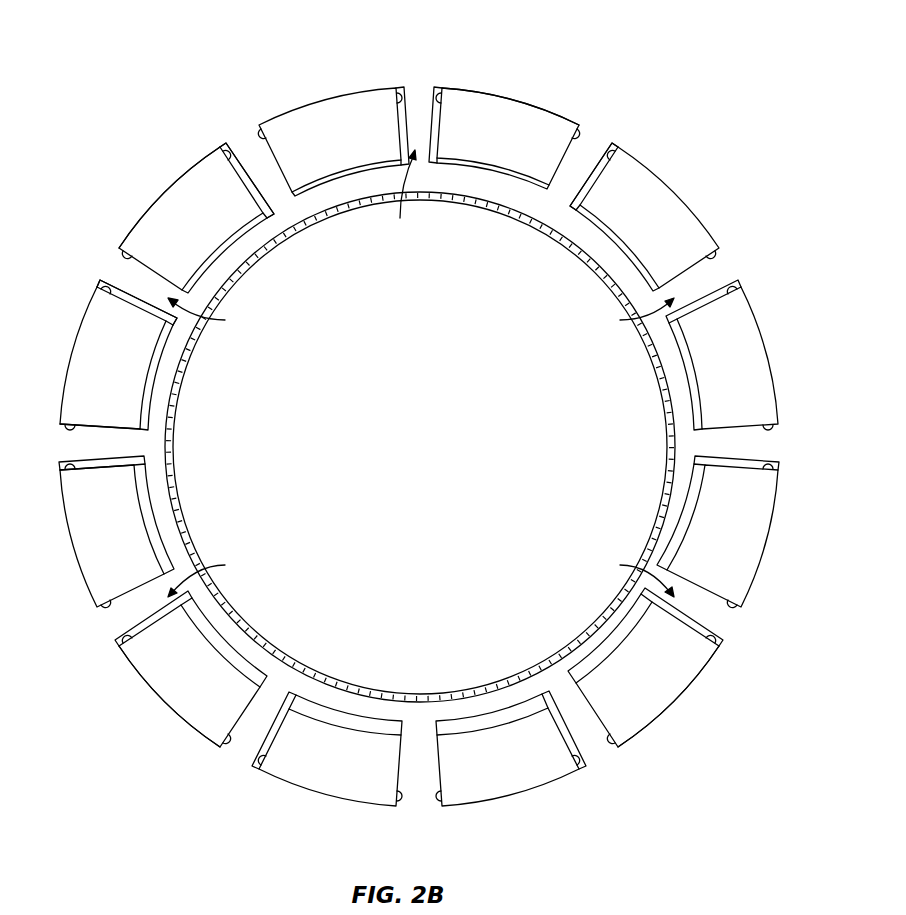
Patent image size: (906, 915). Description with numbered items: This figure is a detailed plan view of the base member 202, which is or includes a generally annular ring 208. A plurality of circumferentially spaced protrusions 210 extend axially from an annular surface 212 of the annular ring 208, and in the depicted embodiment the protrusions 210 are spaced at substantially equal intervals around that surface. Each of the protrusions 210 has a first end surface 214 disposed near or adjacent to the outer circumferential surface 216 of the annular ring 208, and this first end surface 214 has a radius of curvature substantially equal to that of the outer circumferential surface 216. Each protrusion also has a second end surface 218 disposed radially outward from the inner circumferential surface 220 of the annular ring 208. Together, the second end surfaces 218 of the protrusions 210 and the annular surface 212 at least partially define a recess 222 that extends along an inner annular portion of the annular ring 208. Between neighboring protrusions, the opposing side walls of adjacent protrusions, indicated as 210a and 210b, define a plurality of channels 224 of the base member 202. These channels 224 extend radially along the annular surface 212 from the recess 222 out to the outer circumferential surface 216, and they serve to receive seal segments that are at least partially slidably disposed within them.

The base member 202 is at (130, 95).
The annular ring 208 is at (62, 445).
The protrusions 210 is at (477, 103).
The protrusion 210a is at (398, 97).
The protrusion 210b is at (436, 98).
The annular surface 212 is at (125, 270).
The first end surface 214 is at (540, 112).
The outer circumferential surface 216 is at (243, 140).
The second end surface 218 is at (498, 173).
The inner circumferential surface 220 is at (420, 437).
The recess 222 is at (548, 202).
The channels 224 is at (421, 373).